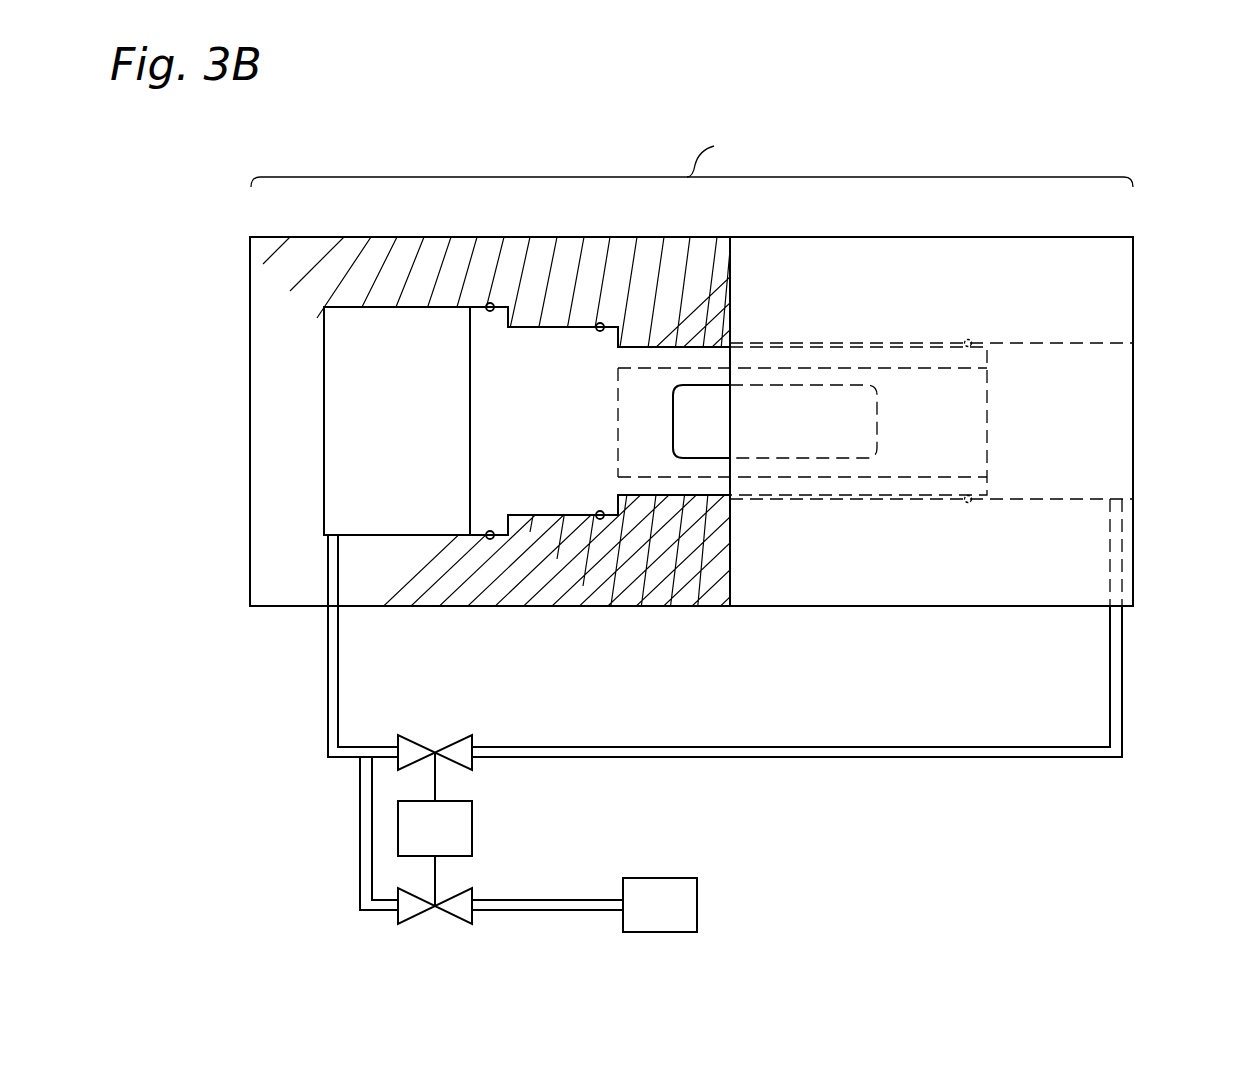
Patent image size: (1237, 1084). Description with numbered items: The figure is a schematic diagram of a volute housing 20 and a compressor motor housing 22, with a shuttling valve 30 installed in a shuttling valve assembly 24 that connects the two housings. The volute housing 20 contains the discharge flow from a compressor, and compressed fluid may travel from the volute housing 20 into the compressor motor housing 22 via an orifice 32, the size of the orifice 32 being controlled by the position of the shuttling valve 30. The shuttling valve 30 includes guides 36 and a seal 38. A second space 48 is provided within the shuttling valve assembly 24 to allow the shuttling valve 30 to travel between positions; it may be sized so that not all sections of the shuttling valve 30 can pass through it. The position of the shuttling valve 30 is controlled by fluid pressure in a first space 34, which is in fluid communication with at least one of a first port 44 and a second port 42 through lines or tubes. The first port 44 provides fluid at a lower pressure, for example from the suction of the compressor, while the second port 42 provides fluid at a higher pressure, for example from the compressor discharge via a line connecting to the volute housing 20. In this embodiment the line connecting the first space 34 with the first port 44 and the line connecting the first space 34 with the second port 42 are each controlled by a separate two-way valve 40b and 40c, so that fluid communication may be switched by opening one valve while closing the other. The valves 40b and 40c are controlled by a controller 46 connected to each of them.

The volute housing 20 is at (853, 237).
The compressor motor housing 22 is at (558, 237).
The shuttling valve assembly 24 is at (692, 160).
The shuttling valve 30 is at (470, 503).
The orifice 32 is at (705, 458).
The first space 34 is at (355, 473).
The guides 36 is at (490, 538).
The seal 38 is at (602, 518).
The two-way valve 40b is at (412, 737).
The two-way valve 40c is at (457, 920).
The second port 42 is at (1133, 383).
The first port 44 is at (672, 878).
The controller 46 is at (472, 827).
The second space 48 is at (1078, 455).